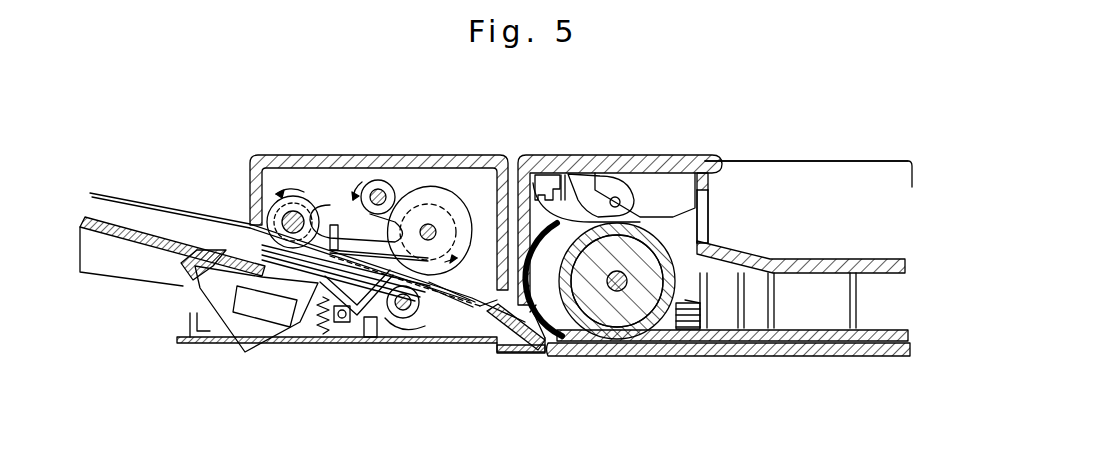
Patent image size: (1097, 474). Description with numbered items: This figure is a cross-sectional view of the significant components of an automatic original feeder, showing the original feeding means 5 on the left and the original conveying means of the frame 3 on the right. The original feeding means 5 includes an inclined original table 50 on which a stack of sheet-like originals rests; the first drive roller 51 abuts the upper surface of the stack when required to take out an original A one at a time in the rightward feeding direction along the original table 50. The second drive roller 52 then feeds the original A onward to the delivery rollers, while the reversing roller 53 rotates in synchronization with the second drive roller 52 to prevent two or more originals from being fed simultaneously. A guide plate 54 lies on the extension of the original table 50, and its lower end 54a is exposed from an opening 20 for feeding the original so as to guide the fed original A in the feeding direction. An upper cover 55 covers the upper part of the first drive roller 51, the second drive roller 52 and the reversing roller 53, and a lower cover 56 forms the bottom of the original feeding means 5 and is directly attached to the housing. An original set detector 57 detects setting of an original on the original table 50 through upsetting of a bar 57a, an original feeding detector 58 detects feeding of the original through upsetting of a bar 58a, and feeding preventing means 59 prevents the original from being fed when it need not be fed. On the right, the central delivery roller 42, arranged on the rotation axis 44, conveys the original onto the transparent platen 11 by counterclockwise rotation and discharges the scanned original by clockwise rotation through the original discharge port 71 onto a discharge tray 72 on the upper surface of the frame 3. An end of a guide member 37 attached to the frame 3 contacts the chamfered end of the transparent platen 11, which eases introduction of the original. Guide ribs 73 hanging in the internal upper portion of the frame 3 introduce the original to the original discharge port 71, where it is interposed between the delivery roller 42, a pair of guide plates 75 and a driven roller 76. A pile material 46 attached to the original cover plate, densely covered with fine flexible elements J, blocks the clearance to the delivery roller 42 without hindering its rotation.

The frame 3 is at (791, 158).
The original feeding means 5 is at (386, 152).
The transparent platen 11 is at (798, 358).
The opening for feeding the original 20 is at (528, 352).
The guide member 37 is at (570, 341).
The delivery roller 42 is at (636, 341).
The rotation axis 44 is at (618, 292).
The pile material 46 is at (692, 340).
The original table 50 is at (132, 292).
The first drive roller 51 is at (270, 202).
The second drive roller 52 is at (440, 187).
The reversing roller 53 is at (373, 320).
The guide plate 54 is at (486, 340).
The lower end of the guide plate 54a is at (513, 342).
The upper cover 55 is at (423, 158).
The lower cover 56 is at (270, 343).
The original set detector 57 is at (250, 324).
The bar 57a is at (305, 318).
The original feeding detector 58 is at (424, 340).
The bar 58a is at (450, 333).
The feeding preventing means 59 is at (338, 337).
The original discharge port 71 is at (718, 198).
The discharge tray 72 is at (838, 262).
The guide ribs 73 is at (667, 183).
The guide plates 75 is at (568, 218).
The driven roller 76 is at (640, 187).
The original A is at (490, 342).
The flexible elements J is at (695, 290).